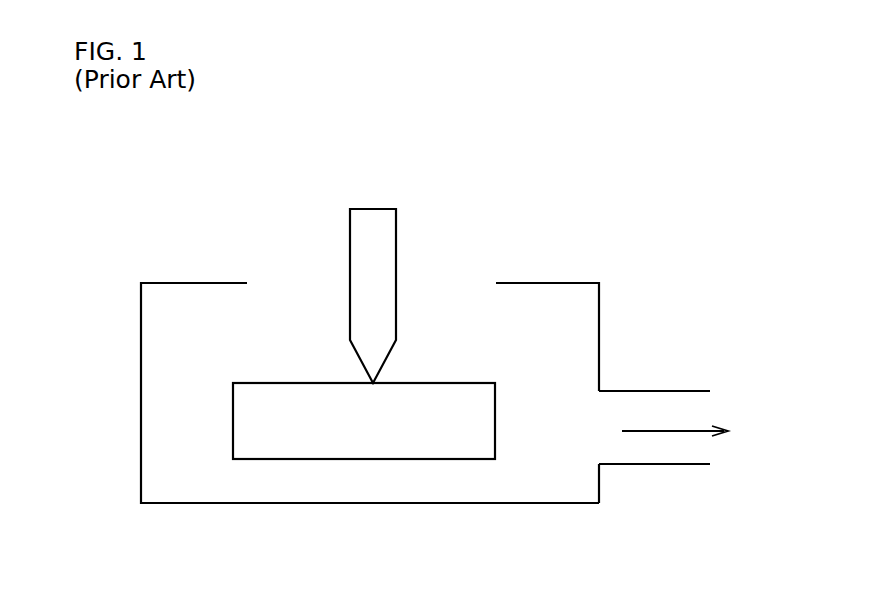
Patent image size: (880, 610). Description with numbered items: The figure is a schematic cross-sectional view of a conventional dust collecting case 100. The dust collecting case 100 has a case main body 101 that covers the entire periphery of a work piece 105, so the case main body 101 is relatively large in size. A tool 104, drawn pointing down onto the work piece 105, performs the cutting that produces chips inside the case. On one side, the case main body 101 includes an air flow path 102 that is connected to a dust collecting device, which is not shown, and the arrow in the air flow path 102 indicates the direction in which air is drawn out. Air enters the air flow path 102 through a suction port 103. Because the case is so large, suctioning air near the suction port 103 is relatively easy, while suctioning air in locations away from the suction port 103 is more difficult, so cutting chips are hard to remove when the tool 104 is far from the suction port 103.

The dust collecting case 100 is at (170, 282).
The case main body 101 is at (545, 283).
The air flow path 102 is at (678, 391).
The suction port 103 is at (592, 432).
The tool 104 is at (370, 209).
The work piece 105 is at (344, 442).